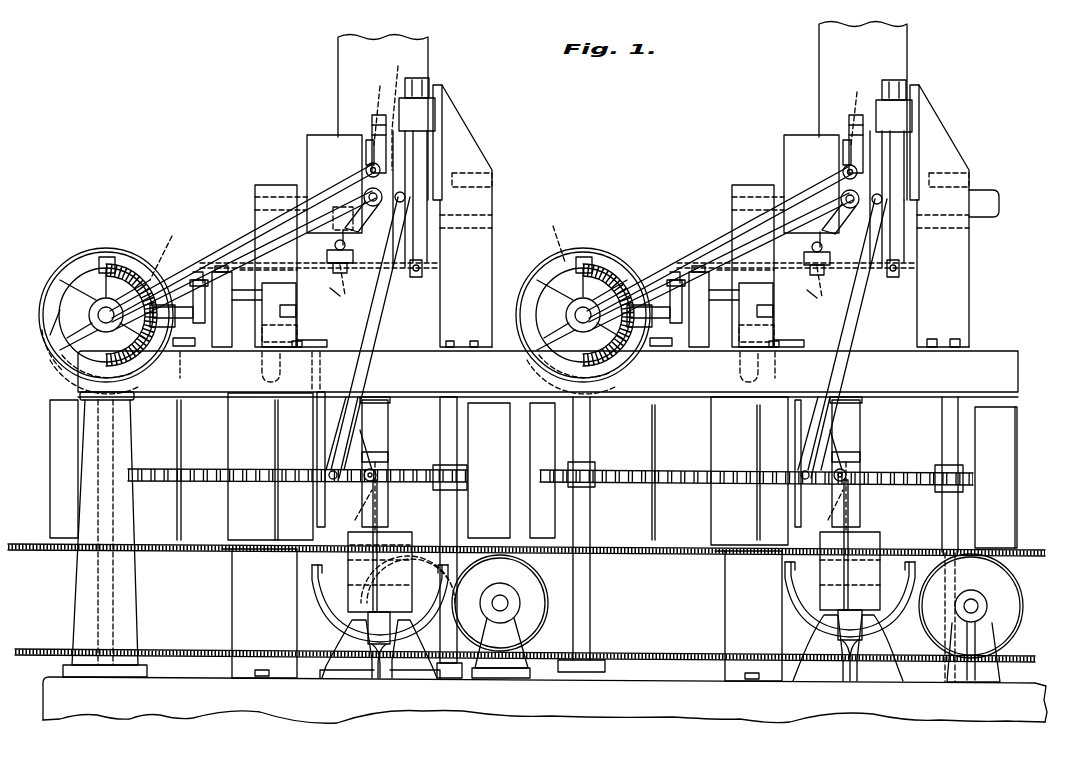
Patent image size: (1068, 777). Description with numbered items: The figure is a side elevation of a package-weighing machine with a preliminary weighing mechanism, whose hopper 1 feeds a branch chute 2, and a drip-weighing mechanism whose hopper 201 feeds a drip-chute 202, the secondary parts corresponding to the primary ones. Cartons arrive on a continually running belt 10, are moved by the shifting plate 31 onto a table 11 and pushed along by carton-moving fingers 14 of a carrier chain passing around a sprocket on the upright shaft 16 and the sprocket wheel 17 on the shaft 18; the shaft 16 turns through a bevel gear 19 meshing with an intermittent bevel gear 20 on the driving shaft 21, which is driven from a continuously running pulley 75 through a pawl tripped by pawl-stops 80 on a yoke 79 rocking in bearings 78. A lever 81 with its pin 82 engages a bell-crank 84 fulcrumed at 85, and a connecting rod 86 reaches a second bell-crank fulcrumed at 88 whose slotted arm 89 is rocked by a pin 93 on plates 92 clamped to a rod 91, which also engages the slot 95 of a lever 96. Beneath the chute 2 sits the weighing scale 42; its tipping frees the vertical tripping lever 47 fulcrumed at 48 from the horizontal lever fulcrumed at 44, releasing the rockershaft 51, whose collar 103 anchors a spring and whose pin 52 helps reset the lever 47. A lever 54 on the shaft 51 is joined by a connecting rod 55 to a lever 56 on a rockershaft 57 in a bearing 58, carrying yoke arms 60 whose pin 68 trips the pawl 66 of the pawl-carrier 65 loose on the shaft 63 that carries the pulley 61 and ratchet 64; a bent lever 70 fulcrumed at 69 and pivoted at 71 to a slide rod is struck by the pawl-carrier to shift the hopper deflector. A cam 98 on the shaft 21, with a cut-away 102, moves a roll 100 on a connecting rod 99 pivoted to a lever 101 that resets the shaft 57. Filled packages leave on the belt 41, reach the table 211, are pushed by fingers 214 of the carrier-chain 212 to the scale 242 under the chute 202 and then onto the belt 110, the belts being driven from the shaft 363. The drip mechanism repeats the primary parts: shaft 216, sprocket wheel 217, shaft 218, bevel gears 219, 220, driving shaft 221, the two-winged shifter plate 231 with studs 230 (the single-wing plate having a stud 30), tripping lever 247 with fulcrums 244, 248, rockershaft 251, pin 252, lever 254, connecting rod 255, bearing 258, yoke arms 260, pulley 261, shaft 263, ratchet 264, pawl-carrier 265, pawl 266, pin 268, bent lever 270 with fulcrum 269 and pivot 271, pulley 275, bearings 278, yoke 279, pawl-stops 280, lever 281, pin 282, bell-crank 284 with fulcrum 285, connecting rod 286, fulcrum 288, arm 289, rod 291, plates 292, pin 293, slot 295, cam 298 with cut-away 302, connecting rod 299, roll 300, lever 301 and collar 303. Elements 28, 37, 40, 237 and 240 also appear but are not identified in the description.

The hopper 1 is at (412, 54).
The branch chute 2 is at (428, 294).
The belt 10 is at (194, 552).
The table 11 is at (236, 558).
The carton-moving fingers 14 is at (212, 408).
The upright shaft 16 is at (100, 592).
The sprocket wheel 17 is at (434, 472).
The shaft 18 is at (440, 504).
The bevel gear 19 is at (56, 362).
The intermittent bevel gear 20 is at (60, 285).
The driving shaft 21 is at (98, 316).
The bracket 28 is at (247, 299).
The stud 30 is at (290, 336).
The shifting plate 31 is at (240, 403).
The block 37 is at (298, 313).
The bar 40 is at (316, 406).
The belt 41 is at (662, 552).
The weighing scale 42 is at (312, 575).
The fulcrum 44 is at (340, 630).
The vertical tripping lever 47 is at (390, 550).
The fulcrum 48 is at (388, 500).
The rockershaft 51 is at (364, 480).
The pin 52 is at (346, 508).
The lever 54 is at (346, 470).
The connecting rod 55 is at (374, 322).
The lever 56 is at (364, 186).
The rockershaft 57 is at (362, 198).
The bearing 58 is at (492, 182).
The yoke arms 60 is at (372, 124).
The pulley 61 is at (314, 134).
The shaft 63 is at (255, 194).
The ratchet 64 is at (429, 172).
The pawl-carrier 65 is at (407, 152).
The pawl 66 is at (400, 110).
The pin 68 is at (330, 312).
The fulcrum 69 is at (448, 96).
The bent lever 70 is at (428, 118).
The pivot 71 is at (424, 262).
The pulley 75 is at (64, 276).
The bearings 78 is at (170, 307).
The yoke 79 is at (134, 270).
The pawl-stops 80 is at (110, 257).
The lever 81 is at (205, 312).
The pin 82 is at (196, 272).
The bell-crank 84 is at (212, 267).
The fulcrum 85 is at (222, 266).
The connecting rod 86 is at (232, 309).
The fulcrum 88 is at (286, 315).
The bell-crank arm 89 is at (328, 296).
The rod 91 is at (340, 238).
The plates 92 is at (330, 254).
The pin 93 is at (338, 280).
The slot 95 is at (320, 264).
The lever 96 is at (331, 218).
The cam 98 is at (62, 305).
The connecting rod 99 is at (240, 240).
The roll 100 is at (106, 285).
The lever 101 is at (366, 168).
The cut-away 102 is at (168, 251).
The collar 103 is at (380, 465).
The belt 110 is at (1010, 552).
The hopper 201 is at (834, 111).
The drip-chute 202 is at (937, 273).
The table 211 is at (716, 556).
The carrier-chain 212 is at (638, 488).
The fingers 214 is at (994, 404).
The upright shaft 216 is at (588, 454).
The sprocket wheel 217 is at (937, 464).
The shaft 218 is at (940, 516).
The bevel gear 219 is at (540, 374).
The intermittent bevel gear 220 is at (566, 296).
The driving shaft 221 is at (544, 324).
The studs 230 is at (755, 336).
The shifter plate 231 is at (735, 408).
The block 237 is at (779, 322).
The bar 240 is at (799, 408).
The weighing scale 242 is at (786, 570).
The fulcrum 244 is at (824, 628).
The vertical tripping lever 247 is at (830, 600).
The fulcrum 248 is at (862, 506).
The rockershaft 251 is at (836, 485).
The pin 252 is at (819, 508).
The lever 254 is at (814, 450).
The connecting rod 255 is at (853, 332).
The bearing 258 is at (965, 170).
The yoke arms 260 is at (843, 135).
The pulley 261 is at (800, 172).
The shaft 263 is at (750, 258).
The ratchet 264 is at (923, 196).
The pawl-carrier 265 is at (932, 198).
The pawl 266 is at (961, 156).
The pin 268 is at (828, 209).
The fulcrum 269 is at (939, 214).
The bent lever 270 is at (928, 106).
The pivot 271 is at (919, 267).
The pulley 275 is at (583, 308).
The bearings 278 is at (648, 307).
The yoke 279 is at (594, 291).
The pawl-stops 280 is at (572, 307).
The lever 281 is at (694, 313).
The pin 282 is at (657, 268).
The bell-crank 284 is at (721, 261).
The fulcrum 285 is at (696, 252).
The connecting rod 286 is at (797, 300).
The fulcrum 288 is at (740, 315).
The bell-crank arm 289 is at (800, 306).
The rod 291 is at (797, 246).
The plates 292 is at (800, 258).
The pin 293 is at (818, 287).
The slot 295 is at (819, 226).
The cam 298 is at (682, 237).
The connecting rod 299 is at (719, 242).
The roll 300 is at (608, 299).
The lever 301 is at (834, 163).
The cut-away 302 is at (548, 234).
The collar 303 is at (846, 470).
The shaft 363 is at (985, 200).